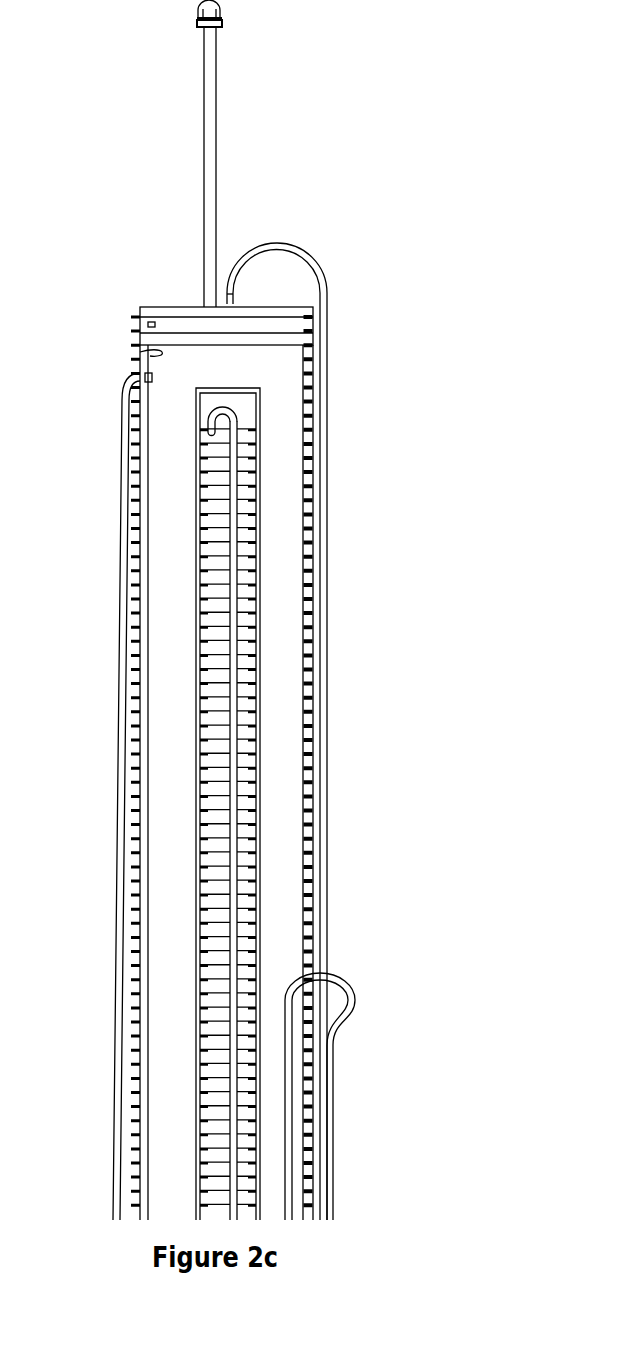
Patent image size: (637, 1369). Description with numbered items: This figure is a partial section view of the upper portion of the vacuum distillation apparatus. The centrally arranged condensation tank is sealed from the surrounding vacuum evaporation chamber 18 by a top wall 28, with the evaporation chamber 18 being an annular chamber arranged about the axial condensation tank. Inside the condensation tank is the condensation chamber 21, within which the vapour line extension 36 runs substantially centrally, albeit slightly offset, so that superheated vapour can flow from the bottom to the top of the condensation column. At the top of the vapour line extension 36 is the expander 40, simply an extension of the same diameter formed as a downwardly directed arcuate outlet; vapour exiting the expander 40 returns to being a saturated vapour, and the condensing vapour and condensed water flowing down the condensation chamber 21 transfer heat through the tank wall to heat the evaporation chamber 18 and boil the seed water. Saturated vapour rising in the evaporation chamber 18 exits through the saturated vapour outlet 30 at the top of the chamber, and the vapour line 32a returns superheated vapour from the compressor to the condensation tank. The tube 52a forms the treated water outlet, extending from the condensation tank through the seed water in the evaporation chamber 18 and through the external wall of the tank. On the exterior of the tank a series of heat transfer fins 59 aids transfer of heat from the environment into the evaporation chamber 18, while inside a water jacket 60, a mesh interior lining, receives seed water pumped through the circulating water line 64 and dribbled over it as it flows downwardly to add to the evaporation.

The vacuum evaporation chamber 18 is at (281, 603).
The condensation chamber 21 is at (245, 695).
The top wall 28 is at (258, 389).
The saturated vapour outlet 30 is at (228, 303).
The vapour line 32a is at (280, 246).
The vapour line extension 36 is at (232, 764).
The expander 40 is at (212, 434).
The tube 52a is at (353, 1003).
The heat transfer fins 59 is at (137, 686).
The water jacket 60 is at (160, 352).
The circulating water line 64 is at (117, 948).